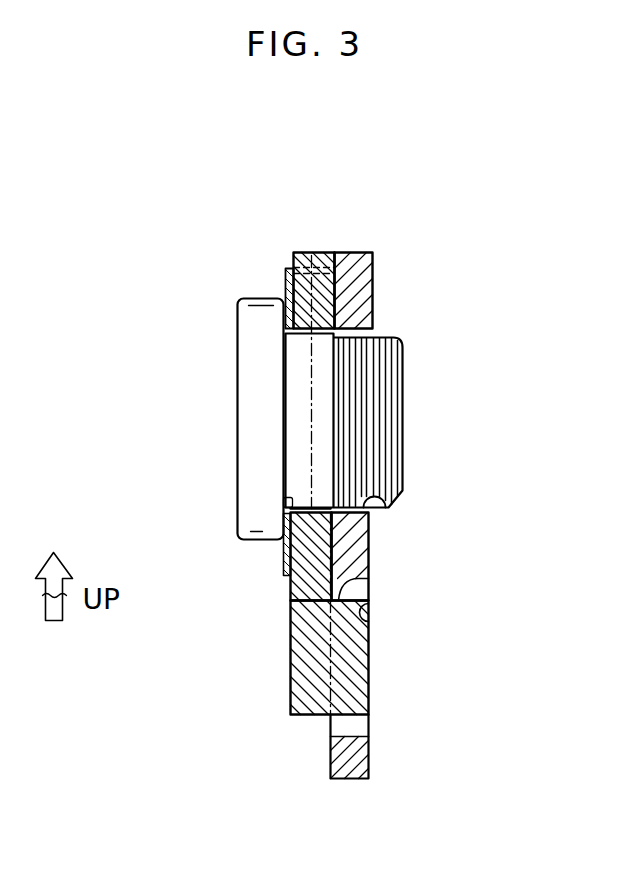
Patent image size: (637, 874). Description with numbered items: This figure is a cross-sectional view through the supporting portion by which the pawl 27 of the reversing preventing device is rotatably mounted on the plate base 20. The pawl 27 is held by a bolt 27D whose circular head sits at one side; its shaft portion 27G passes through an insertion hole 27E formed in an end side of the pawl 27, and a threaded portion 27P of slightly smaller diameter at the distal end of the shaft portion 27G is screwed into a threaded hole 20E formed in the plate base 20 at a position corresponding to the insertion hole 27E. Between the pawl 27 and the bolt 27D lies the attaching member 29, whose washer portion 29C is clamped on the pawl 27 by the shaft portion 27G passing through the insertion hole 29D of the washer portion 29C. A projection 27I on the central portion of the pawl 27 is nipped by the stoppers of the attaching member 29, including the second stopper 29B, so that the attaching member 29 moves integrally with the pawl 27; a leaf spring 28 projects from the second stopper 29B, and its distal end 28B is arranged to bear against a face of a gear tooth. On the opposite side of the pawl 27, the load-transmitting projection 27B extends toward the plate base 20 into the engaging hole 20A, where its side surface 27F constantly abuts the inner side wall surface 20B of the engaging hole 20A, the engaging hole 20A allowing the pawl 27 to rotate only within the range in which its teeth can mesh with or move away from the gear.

The plate base 20 is at (355, 249).
The engaging hole 20A is at (349, 727).
The inner side wall surface 20B is at (370, 625).
The threaded hole 20E is at (388, 506).
The pawl 27 is at (297, 721).
The projection 27B is at (370, 692).
The bolt 27D is at (222, 358).
The insertion hole 27E is at (333, 366).
The side surface 27F is at (370, 578).
The shaft portion 27G is at (302, 403).
The projection 27I is at (308, 253).
The threaded portion 27P is at (377, 428).
The leaf spring 28 is at (336, 285).
The distal end 28B is at (342, 570).
The attaching member 29 is at (268, 558).
The second stopper 29B is at (292, 253).
The washer portion 29C is at (282, 573).
The insertion hole 29D is at (283, 496).